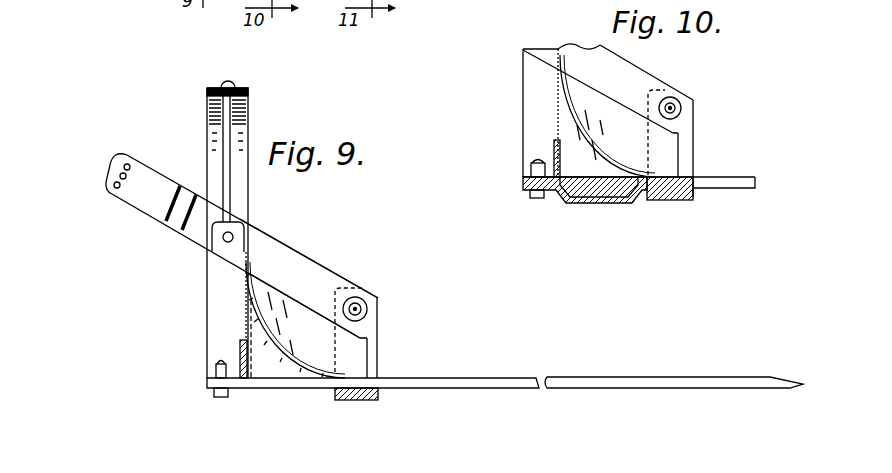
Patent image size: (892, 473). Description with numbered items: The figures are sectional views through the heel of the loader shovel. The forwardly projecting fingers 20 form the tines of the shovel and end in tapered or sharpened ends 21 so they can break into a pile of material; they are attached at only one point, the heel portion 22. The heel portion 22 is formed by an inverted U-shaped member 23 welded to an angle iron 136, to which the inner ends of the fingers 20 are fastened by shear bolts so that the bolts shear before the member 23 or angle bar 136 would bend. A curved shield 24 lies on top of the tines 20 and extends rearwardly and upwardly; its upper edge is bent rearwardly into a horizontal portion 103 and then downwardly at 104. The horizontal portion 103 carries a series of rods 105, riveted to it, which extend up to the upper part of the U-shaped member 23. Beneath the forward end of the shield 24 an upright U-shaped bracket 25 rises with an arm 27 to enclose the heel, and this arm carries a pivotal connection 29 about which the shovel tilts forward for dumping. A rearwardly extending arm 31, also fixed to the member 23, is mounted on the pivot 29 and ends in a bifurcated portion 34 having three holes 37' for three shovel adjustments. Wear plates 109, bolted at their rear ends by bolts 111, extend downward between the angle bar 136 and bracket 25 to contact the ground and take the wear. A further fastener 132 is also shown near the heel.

In FIG. 9, the fingers 20 is at (512, 383).
In FIG. 9, the tapered or sharpened ends 21 is at (790, 386).
In FIG. 9, the heel portion 22 is at (290, 390).
In FIG. 9, the inverted U-shaped member 23 is at (246, 89).
In FIG. 10, the inverted U-shaped member 23 is at (530, 92).
In FIG. 9, the curved shield 24 is at (290, 363).
In FIG. 10, the curved shield 24 is at (597, 165).
In FIG. 9, the upright U-shaped bracket 25 is at (362, 402).
In FIG. 10, the upright U-shaped bracket 25 is at (673, 200).
In FIG. 9, the upwardly extending arm 27 is at (378, 337).
In FIG. 9, the pivotal connection 29 is at (368, 309).
In FIG. 10, the pivotal connection 29 is at (682, 102).
In FIG. 9, the rearwardly extending arm 31 is at (310, 265).
In FIG. 10, the rearwardly extending arm 31 is at (647, 82).
In FIG. 9, the bifurcated rear end portion 34 is at (150, 170).
In FIG. 9, the holes 37' is at (90, 172).
In FIG. 9, the horizontal portion 103 is at (240, 224).
In FIG. 9, the downwardly bent portion 104 is at (207, 240).
In FIG. 9, the rods 105 is at (227, 121).
In FIG. 10, the wear plates 109 is at (614, 204).
In FIG. 10, the bolts 111 is at (528, 176).
In FIG. 9, the bolt 132 is at (214, 370).
In FIG. 9, the angle iron 136 is at (240, 352).
In FIG. 10, the angle iron 136 is at (554, 152).